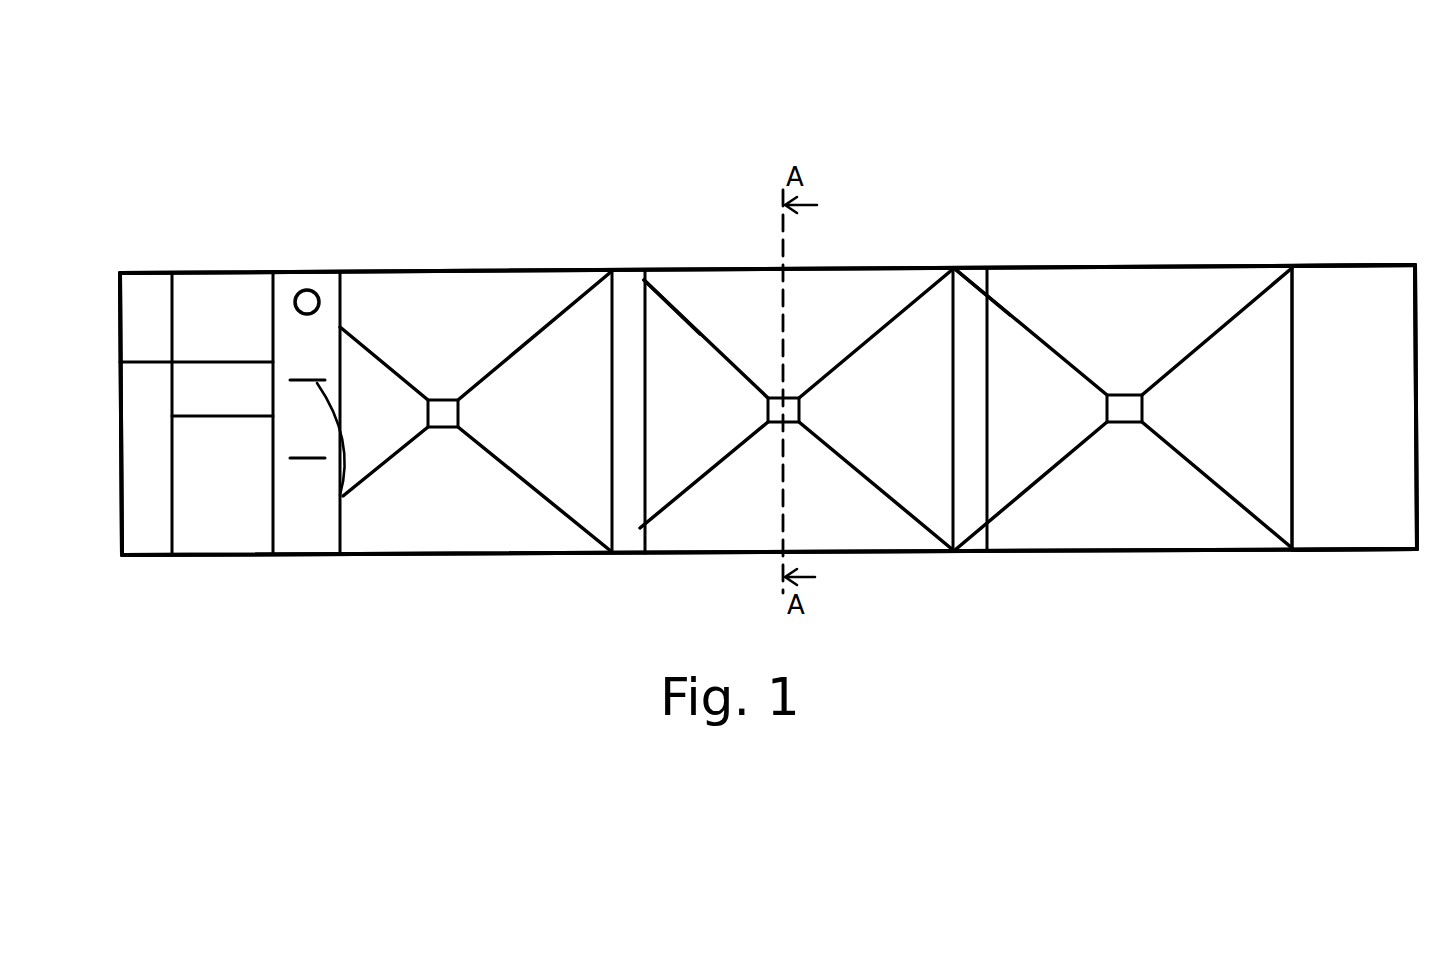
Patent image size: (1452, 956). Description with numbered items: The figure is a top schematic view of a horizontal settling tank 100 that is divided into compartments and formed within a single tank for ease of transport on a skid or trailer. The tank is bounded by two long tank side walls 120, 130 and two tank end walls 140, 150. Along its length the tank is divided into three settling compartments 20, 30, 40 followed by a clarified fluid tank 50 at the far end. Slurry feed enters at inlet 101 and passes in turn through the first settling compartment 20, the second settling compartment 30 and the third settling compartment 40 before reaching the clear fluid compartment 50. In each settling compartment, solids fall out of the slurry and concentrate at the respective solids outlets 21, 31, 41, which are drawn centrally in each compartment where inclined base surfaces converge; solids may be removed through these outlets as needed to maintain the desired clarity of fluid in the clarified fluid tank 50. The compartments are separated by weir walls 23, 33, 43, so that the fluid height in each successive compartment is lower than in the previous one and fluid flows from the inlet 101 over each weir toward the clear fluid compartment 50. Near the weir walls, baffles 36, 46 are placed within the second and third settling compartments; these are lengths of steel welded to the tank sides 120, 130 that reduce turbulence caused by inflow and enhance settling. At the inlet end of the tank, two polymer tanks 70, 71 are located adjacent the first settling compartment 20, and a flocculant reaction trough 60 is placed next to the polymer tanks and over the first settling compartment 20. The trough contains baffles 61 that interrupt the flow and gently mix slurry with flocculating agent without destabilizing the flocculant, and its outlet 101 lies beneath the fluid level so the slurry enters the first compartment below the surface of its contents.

The horizontal settling tank 100 is at (1182, 157).
The tank side wall 120 is at (1102, 553).
The tank side wall 130 is at (1051, 264).
The tank end wall 140 is at (268, 303).
The tank end wall 150 is at (1418, 549).
The first settling compartment 20 is at (505, 278).
The solids outlet 21 is at (443, 420).
The weir wall 23 is at (608, 530).
The second settling compartment 30 is at (860, 272).
The solids outlet 31 is at (783, 418).
The weir wall 33 is at (950, 523).
The baffle 36 is at (652, 325).
The third settling compartment 40 is at (1205, 273).
The solids outlet 41 is at (1124, 415).
The weir wall 43 is at (1290, 515).
The baffle 46 is at (990, 312).
The clarified fluid tank 50 is at (1372, 288).
The flocculant reaction trough 60 is at (310, 543).
The baffles 61 is at (318, 461).
The polymer tank 70 is at (226, 506).
The polymer tank 71 is at (202, 292).
The inlet 101 is at (313, 288).